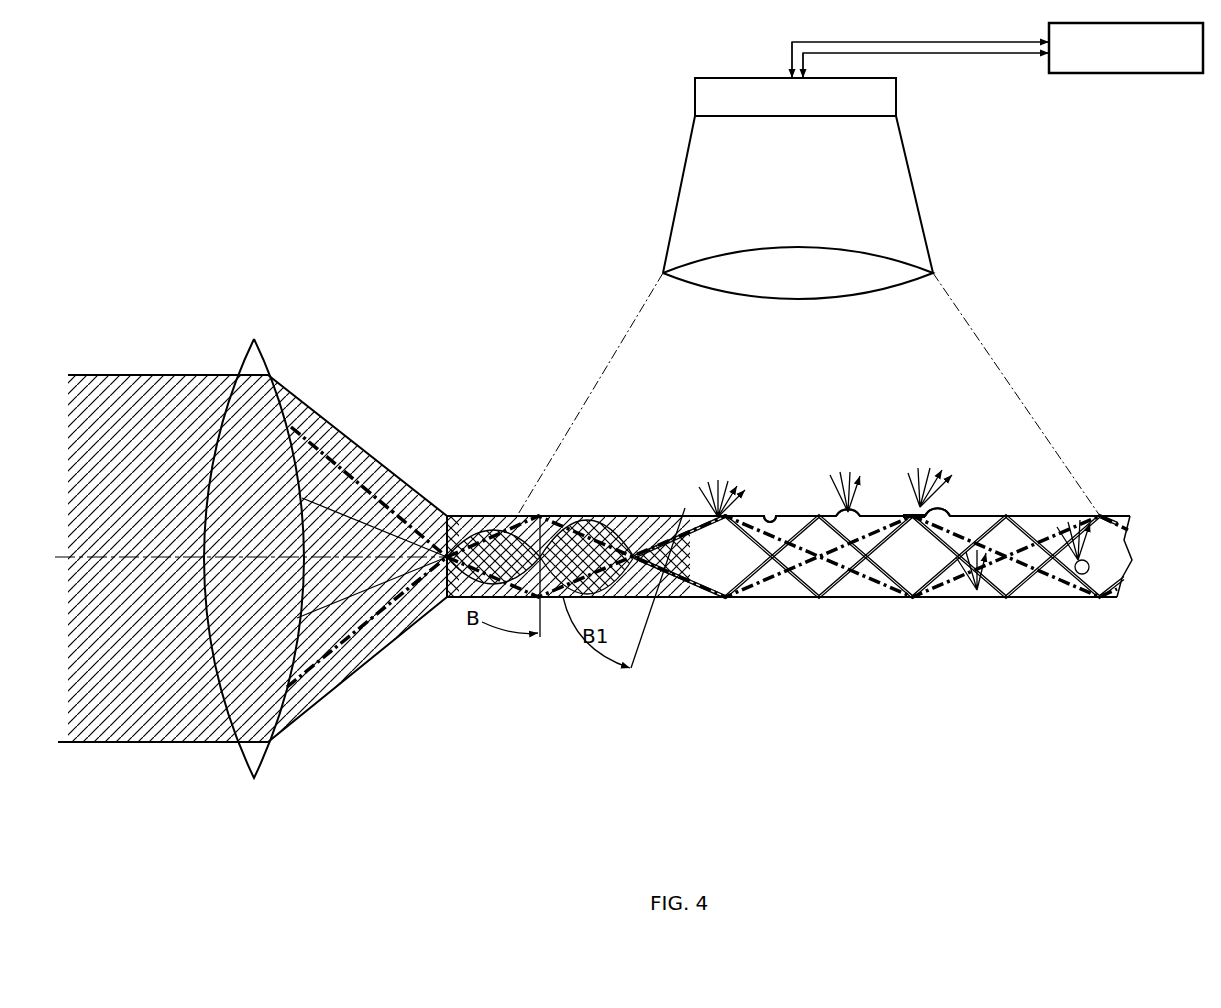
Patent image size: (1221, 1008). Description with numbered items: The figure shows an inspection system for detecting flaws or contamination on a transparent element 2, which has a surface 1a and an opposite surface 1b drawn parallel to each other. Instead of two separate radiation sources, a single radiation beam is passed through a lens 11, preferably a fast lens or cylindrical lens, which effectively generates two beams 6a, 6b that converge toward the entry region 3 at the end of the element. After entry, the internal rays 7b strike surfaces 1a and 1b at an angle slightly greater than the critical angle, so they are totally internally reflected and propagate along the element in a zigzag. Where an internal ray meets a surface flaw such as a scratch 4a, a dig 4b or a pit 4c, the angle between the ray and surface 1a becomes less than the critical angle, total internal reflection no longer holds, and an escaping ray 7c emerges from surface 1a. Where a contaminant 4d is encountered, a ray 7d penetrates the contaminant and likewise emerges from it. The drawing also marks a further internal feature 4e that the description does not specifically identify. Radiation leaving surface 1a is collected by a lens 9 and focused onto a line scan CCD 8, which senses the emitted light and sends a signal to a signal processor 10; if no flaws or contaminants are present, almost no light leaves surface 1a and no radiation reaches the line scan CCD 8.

The surface 1a is at (1038, 515).
The surface 1b is at (858, 597).
The transparent element 2 is at (872, 558).
The light entry end face 3 is at (463, 515).
The scratch 4a is at (725, 517).
The dig 4b is at (767, 517).
The pit 4c is at (848, 507).
The contaminant 4d is at (947, 510).
The inclusion defect 4e is at (1090, 562).
The upper marginal ray of focused beam 6a is at (390, 468).
The lower marginal ray of focused beam 6b is at (337, 650).
The internal rays 7b is at (527, 515).
The escaping ray 7c is at (700, 512).
The ray 7d is at (920, 505).
The line scan CCD 8 is at (875, 95).
The lens 9 is at (872, 282).
The signal processor 10 is at (1093, 65).
The lens 11 is at (260, 427).